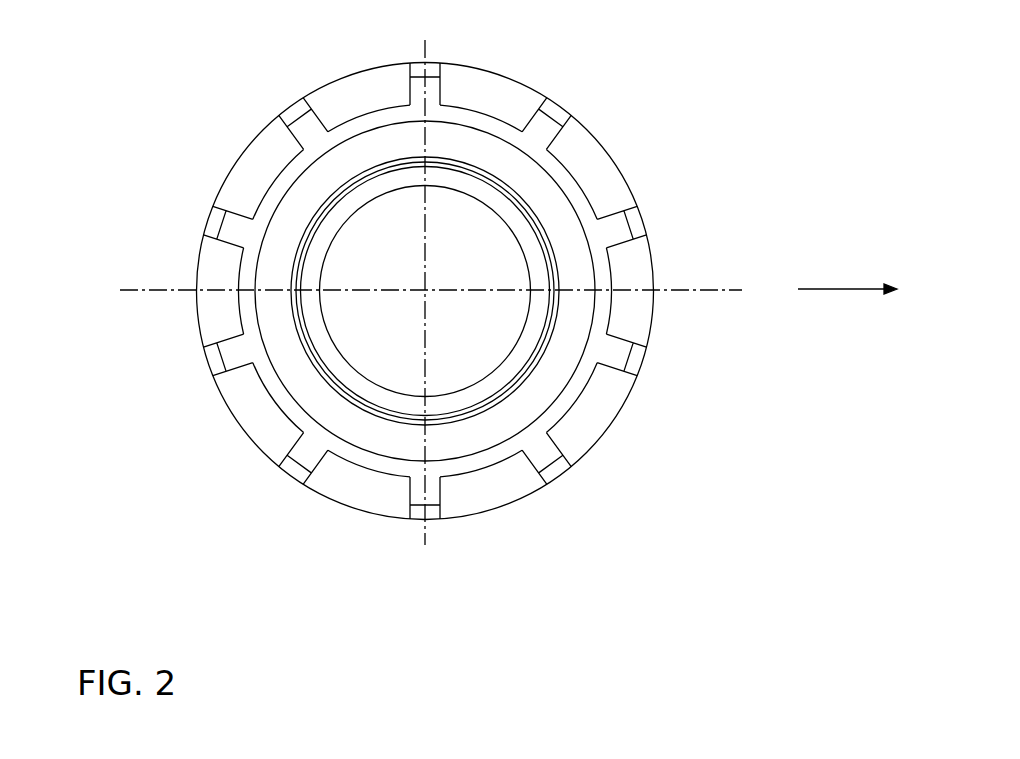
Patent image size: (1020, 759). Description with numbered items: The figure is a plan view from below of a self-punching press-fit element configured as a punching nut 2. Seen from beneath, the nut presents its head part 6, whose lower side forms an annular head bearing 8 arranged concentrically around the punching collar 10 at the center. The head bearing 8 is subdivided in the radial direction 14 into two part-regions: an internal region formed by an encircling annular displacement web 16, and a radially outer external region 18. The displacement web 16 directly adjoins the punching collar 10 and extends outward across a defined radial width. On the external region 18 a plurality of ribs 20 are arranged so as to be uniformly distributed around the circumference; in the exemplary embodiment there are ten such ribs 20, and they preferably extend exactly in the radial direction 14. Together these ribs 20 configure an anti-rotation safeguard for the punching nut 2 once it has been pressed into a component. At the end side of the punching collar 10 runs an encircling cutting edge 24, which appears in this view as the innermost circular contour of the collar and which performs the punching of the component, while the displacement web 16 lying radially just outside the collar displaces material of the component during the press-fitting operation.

The punching nut 2 is at (678, 68).
The head part 6 is at (298, 200).
The head bearing 8 is at (237, 315).
The punching collar 10 is at (568, 257).
The radial direction 14 is at (830, 289).
The displacement web 16 is at (368, 460).
The external region 18 is at (495, 488).
The ribs 20 is at (633, 343).
The cutting edge 24 is at (478, 128).